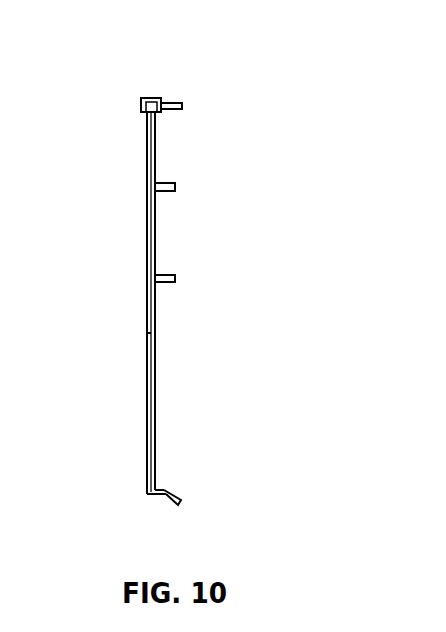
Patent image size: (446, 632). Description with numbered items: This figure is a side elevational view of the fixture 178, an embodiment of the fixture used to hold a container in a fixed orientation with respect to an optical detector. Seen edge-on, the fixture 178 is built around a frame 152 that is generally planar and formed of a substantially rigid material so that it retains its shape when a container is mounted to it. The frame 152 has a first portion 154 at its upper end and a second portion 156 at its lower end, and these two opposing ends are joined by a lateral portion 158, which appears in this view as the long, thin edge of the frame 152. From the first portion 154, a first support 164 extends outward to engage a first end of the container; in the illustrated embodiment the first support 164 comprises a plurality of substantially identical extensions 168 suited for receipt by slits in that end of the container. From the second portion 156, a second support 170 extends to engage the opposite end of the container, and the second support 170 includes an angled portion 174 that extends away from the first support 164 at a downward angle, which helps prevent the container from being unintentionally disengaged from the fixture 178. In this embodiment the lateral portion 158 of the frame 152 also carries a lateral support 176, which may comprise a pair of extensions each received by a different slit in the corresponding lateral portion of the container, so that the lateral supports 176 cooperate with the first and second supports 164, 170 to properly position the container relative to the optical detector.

The frame 152 is at (166, 394).
The first portion 154 is at (142, 106).
The second portion 156 is at (150, 492).
The lateral portion 158 is at (147, 320).
The first support 164 is at (172, 103).
The extensions 168 is at (171, 106).
The second support 170 is at (160, 510).
The angled portion 174 is at (165, 497).
The lateral support 176 is at (170, 183).
The fixture 178 is at (101, 211).